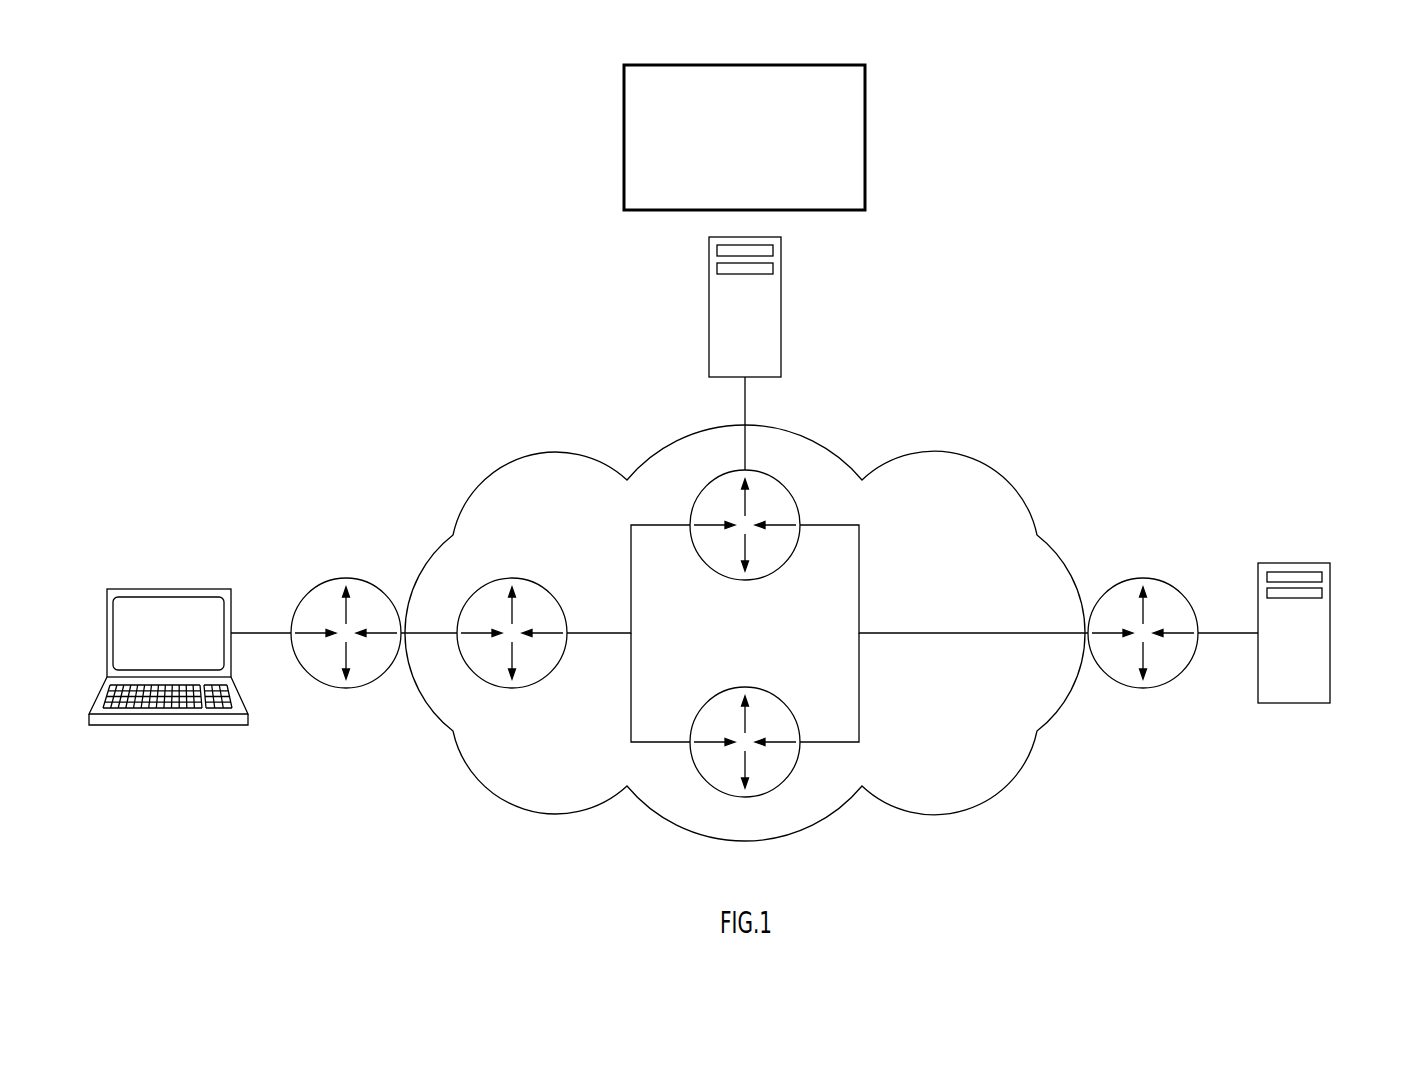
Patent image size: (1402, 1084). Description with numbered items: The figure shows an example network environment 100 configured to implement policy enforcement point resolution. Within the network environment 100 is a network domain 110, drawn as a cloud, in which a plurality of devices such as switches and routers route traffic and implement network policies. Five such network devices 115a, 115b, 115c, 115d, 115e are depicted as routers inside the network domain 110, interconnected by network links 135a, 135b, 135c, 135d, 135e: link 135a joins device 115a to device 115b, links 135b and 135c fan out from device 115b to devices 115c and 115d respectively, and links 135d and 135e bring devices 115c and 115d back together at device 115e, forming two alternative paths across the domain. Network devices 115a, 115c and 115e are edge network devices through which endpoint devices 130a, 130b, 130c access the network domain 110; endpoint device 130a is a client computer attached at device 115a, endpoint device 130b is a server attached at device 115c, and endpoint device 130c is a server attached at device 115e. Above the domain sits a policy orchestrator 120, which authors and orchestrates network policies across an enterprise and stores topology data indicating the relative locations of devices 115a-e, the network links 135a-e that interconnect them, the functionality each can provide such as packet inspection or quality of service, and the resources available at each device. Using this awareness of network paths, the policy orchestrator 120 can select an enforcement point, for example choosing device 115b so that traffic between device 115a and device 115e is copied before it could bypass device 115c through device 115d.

The network environment 100 is at (364, 309).
The network domain 110 is at (973, 459).
The network device 115a is at (308, 594).
The network device 115b is at (549, 594).
The network device 115c is at (789, 566).
The network device 115d is at (701, 703).
The network device 115e is at (1186, 595).
The policy orchestrator 120 is at (624, 137).
The endpoint device 130a is at (142, 589).
The endpoint device 130b is at (781, 330).
The endpoint device 130c is at (1330, 667).
The network link 135a is at (428, 636).
The network link 135b is at (631, 560).
The network link 135c is at (631, 698).
The network link 135d is at (859, 603).
The network link 135e is at (859, 668).